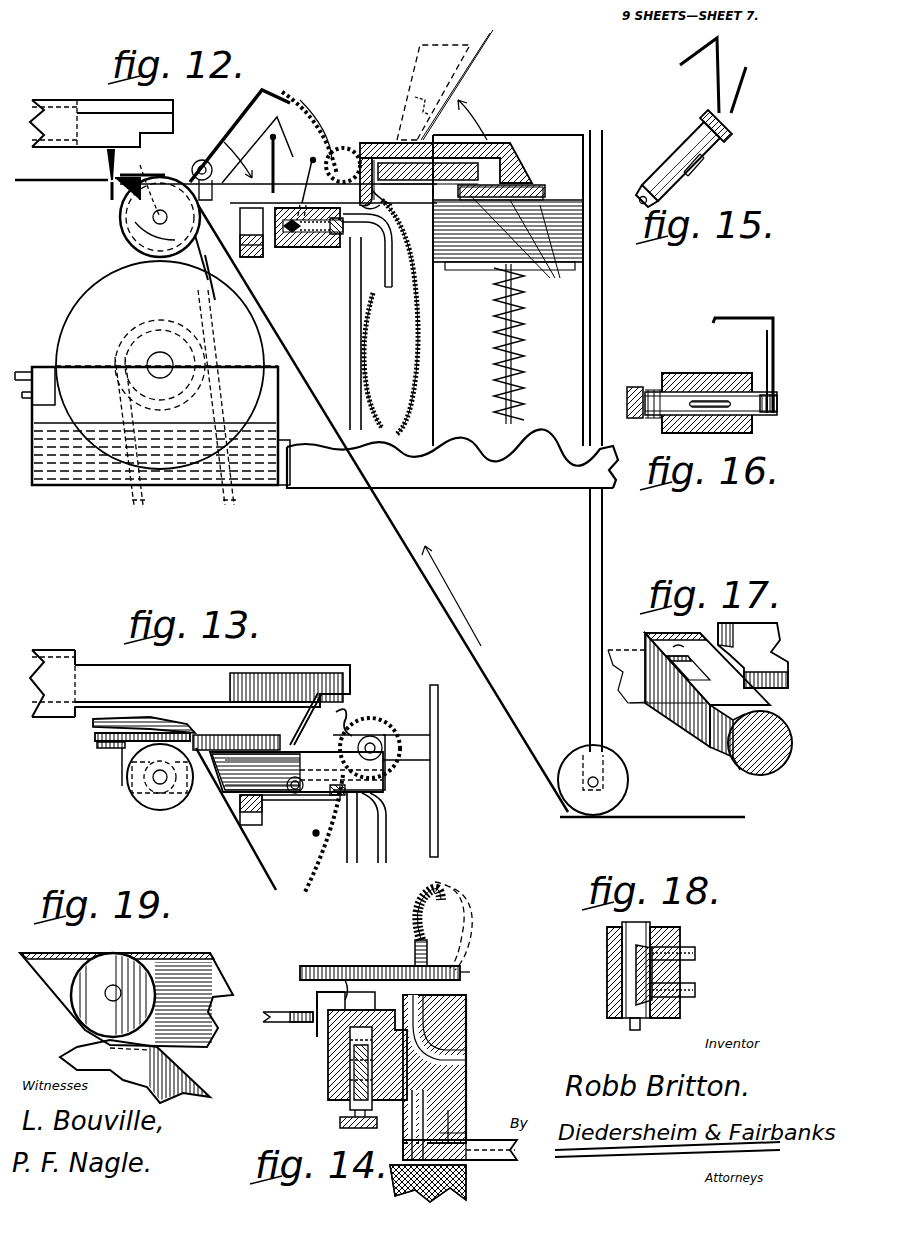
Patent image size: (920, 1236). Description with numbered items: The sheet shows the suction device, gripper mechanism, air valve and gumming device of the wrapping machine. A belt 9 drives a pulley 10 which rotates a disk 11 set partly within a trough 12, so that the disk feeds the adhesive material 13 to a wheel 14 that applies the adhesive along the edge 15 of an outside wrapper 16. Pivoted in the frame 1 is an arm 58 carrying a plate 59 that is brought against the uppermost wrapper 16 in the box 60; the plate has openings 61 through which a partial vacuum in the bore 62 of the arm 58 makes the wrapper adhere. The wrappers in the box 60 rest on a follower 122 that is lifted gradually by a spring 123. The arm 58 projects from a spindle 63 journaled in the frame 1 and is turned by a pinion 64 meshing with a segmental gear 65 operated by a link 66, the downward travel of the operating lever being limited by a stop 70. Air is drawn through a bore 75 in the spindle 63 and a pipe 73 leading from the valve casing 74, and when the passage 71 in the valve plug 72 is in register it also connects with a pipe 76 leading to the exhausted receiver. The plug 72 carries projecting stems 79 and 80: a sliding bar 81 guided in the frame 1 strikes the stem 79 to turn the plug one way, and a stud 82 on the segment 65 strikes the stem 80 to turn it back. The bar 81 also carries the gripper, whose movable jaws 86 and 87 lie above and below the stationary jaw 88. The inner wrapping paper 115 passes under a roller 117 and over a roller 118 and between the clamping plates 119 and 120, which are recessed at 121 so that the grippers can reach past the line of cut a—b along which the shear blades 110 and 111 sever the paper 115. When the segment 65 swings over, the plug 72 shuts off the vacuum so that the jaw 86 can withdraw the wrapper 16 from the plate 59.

In FIG. 12, the frame 1 is at (572, 492).
In FIG. 14, the frame 1 is at (468, 1086).
In FIG. 17, the frame 1 is at (775, 628).
In FIG. 12, the belt 9 is at (134, 500).
In FIG. 12, the pulley 10 is at (182, 398).
In FIG. 12, the disk 11 is at (80, 316).
In FIG. 19, the disk 11 is at (130, 1068).
In FIG. 12, the trough 12 is at (267, 405).
In FIG. 12, the adhesive material 13 is at (252, 472).
In FIG. 12, the wheel 14 is at (135, 238).
In FIG. 19, the wheel 14 is at (98, 1010).
In FIG. 19, the edge of outside wrapper 15 is at (52, 976).
In FIG. 12, the outside wrapper 16 is at (486, 80).
In FIG. 13, the outside wrapper 16 is at (268, 711).
In FIG. 19, the outside wrapper 16 is at (203, 972).
In FIG. 12, the arm 58 is at (400, 82).
In FIG. 13, the arm 58 is at (275, 757).
In FIG. 14, the arm 58 is at (470, 1148).
In FIG. 12, the plate 59 is at (470, 240).
In FIG. 13, the plate 59 is at (262, 765).
In FIG. 12, the box 60 is at (572, 319).
In FIG. 12, the openings 61 is at (517, 244).
In FIG. 12, the bore 62 is at (495, 143).
In FIG. 14, the bore 62 is at (462, 1168).
In FIG. 12, the spindle 63 is at (376, 160).
In FIG. 13, the spindle 63 is at (381, 742).
In FIG. 14, the spindle 63 is at (462, 988).
In FIG. 12, the pinion 64 is at (348, 148).
In FIG. 13, the pinion 64 is at (368, 735).
In FIG. 14, the pinion 64 is at (462, 973).
In FIG. 12, the segmental gear 65 is at (302, 98).
In FIG. 13, the segmental gear 65 is at (321, 842).
In FIG. 14, the segmental gear 65 is at (312, 968).
In FIG. 12, the link 66 is at (207, 252).
In FIG. 12, the stop 70 is at (262, 245).
In FIG. 13, the stop 70 is at (262, 815).
In FIG. 12, the passage 71 is at (300, 238).
In FIG. 13, the passage 71 is at (298, 795).
In FIG. 14, the passage 71 is at (352, 1066).
In FIG. 15, the passage 71 is at (694, 170).
In FIG. 16, the passage 71 is at (708, 400).
In FIG. 12, the valve plug 72 is at (318, 248).
In FIG. 13, the valve plug 72 is at (308, 796).
In FIG. 14, the valve plug 72 is at (340, 1095).
In FIG. 15, the valve plug 72 is at (680, 162).
In FIG. 16, the valve plug 72 is at (672, 392).
In FIG. 18, the valve plug 72 is at (632, 977).
In FIG. 12, the pipe 73 is at (396, 340).
In FIG. 13, the pipe 73 is at (388, 844).
In FIG. 14, the pipe 73 is at (468, 1040).
In FIG. 18, the pipe 73 is at (690, 988).
In FIG. 12, the valve casing 74 is at (330, 247).
In FIG. 13, the valve casing 74 is at (360, 866).
In FIG. 14, the valve casing 74 is at (330, 1058).
In FIG. 16, the valve casing 74 is at (667, 430).
In FIG. 18, the valve casing 74 is at (680, 1018).
In FIG. 12, the bore in spindle 75 is at (380, 198).
In FIG. 13, the bore in spindle 75 is at (300, 795).
In FIG. 14, the bore in spindle 75 is at (480, 1100).
In FIG. 12, the pipe 76 is at (350, 300).
In FIG. 13, the pipe 76 is at (362, 862).
In FIG. 14, the pipe 76 is at (440, 1016).
In FIG. 18, the pipe 76 is at (695, 958).
In FIG. 12, the stem 79 is at (273, 155).
In FIG. 13, the stem 79 is at (318, 718).
In FIG. 14, the stem 79 is at (317, 998).
In FIG. 15, the stem 79 is at (714, 82).
In FIG. 16, the stem 79 is at (743, 354).
In FIG. 12, the stem 80 is at (299, 192).
In FIG. 13, the stem 80 is at (339, 716).
In FIG. 14, the stem 80 is at (348, 985).
In FIG. 15, the stem 80 is at (748, 90).
In FIG. 16, the stem 80 is at (776, 342).
In FIG. 12, the bar 81 is at (101, 123).
In FIG. 13, the bar 81 is at (190, 683).
In FIG. 12, the stud 82 is at (309, 133).
In FIG. 13, the stud 82 is at (320, 840).
In FIG. 14, the stud 82 is at (380, 968).
In FIG. 13, the jaw 86 is at (140, 722).
In FIG. 13, the jaw 87 is at (112, 750).
In FIG. 13, the stationary jaw 88 is at (95, 737).
In FIG. 12, the blade 110 is at (160, 215).
In FIG. 12, the blade 111 is at (118, 200).
In FIG. 12, the wrapping material 115 is at (65, 182).
In FIG. 13, the wrapping material 115 is at (268, 890).
In FIG. 17, the wrapping material 115 is at (628, 708).
In FIG. 12, the roller 117 is at (618, 786).
In FIG. 12, the roller 118 is at (125, 232).
In FIG. 13, the roller 118 is at (150, 792).
In FIG. 17, the roller 118 is at (732, 778).
In FIG. 17, the plate 119 is at (776, 640).
In FIG. 17, the plate 120 is at (733, 760).
In FIG. 17, the recess 121 is at (697, 674).
In FIG. 12, the follower 122 is at (509, 295).
In FIG. 12, the spring 123 is at (518, 348).
In FIG. 17, the line of cut a is at (648, 648).
In FIG. 17, the line of cut b is at (677, 690).